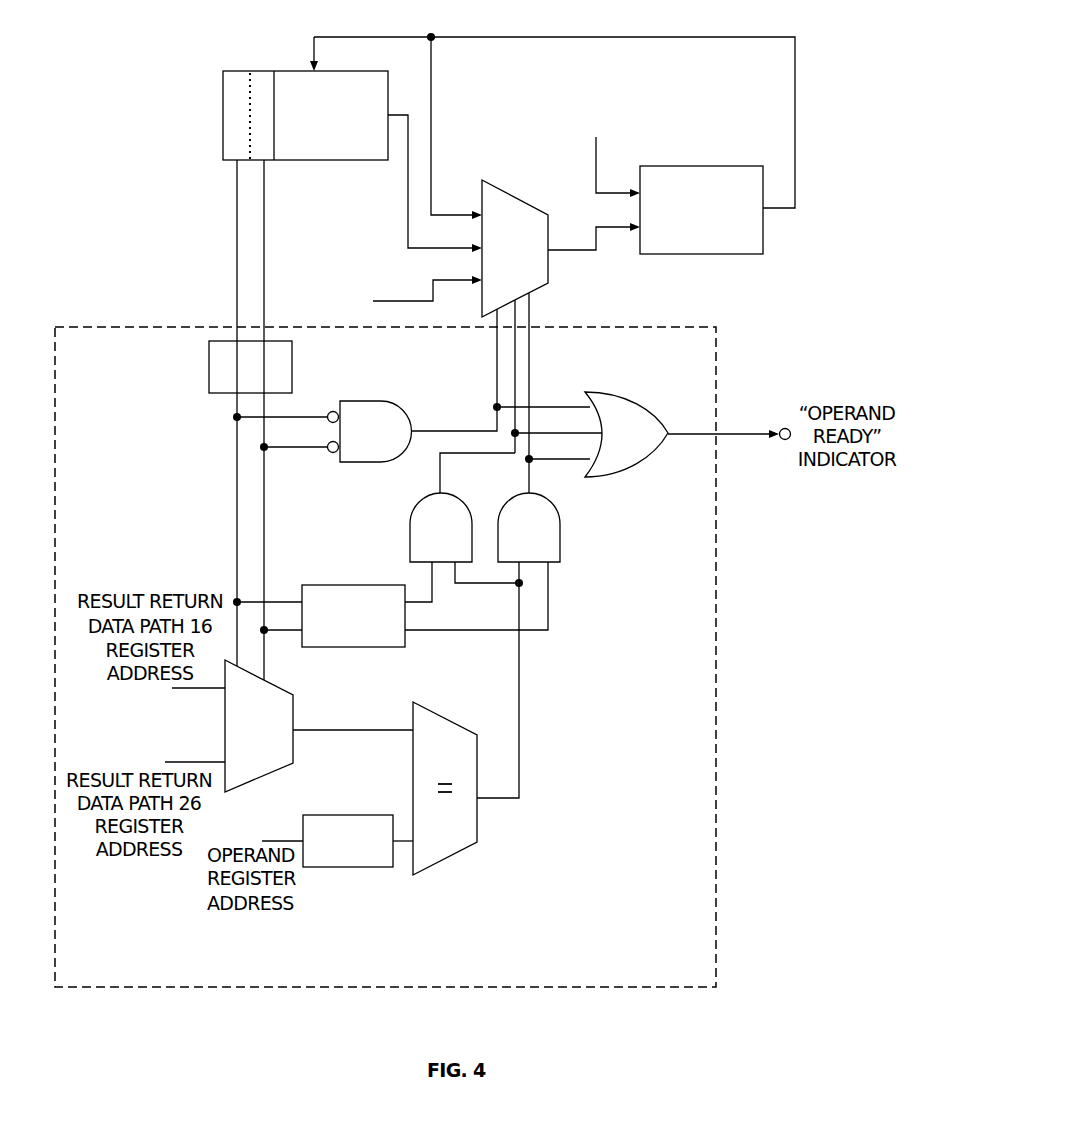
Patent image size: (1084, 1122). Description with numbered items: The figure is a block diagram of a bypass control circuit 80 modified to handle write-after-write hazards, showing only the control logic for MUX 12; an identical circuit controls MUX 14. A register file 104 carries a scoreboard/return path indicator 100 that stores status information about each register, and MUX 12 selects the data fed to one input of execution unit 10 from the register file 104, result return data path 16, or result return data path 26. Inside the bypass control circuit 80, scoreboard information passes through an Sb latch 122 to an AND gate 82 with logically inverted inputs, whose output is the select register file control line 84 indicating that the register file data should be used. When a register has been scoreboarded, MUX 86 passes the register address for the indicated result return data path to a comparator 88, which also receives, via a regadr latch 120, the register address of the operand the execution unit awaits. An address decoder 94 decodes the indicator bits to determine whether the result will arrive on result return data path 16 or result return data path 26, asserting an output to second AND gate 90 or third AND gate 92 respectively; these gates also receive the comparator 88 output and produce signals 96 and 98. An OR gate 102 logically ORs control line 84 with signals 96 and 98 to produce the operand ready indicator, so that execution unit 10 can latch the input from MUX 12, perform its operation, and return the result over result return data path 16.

The execution unit 10 is at (691, 243).
The MUX 12 is at (503, 273).
The MUX 14 is at (591, 153).
The result return data path 16 is at (552, 126).
The result return data path 26 is at (375, 277).
The bypass control circuit 80 is at (711, 980).
The AND gate 82 is at (357, 401).
The select register file control line 84 is at (497, 392).
The MUX 86 is at (249, 751).
The comparator 88 is at (457, 855).
The second AND gate 90 is at (410, 545).
The third AND gate 92 is at (560, 537).
The address decoder 94 is at (320, 585).
The S_RP16 signal 96 is at (487, 455).
The S_RP26 signal 98 is at (531, 468).
The scoreboard/return path indicator 100 is at (222, 110).
The OR gate 102 is at (640, 467).
The register file 104 is at (317, 153).
The regadr latch 120 is at (358, 867).
The Sb latch 122 is at (209, 362).